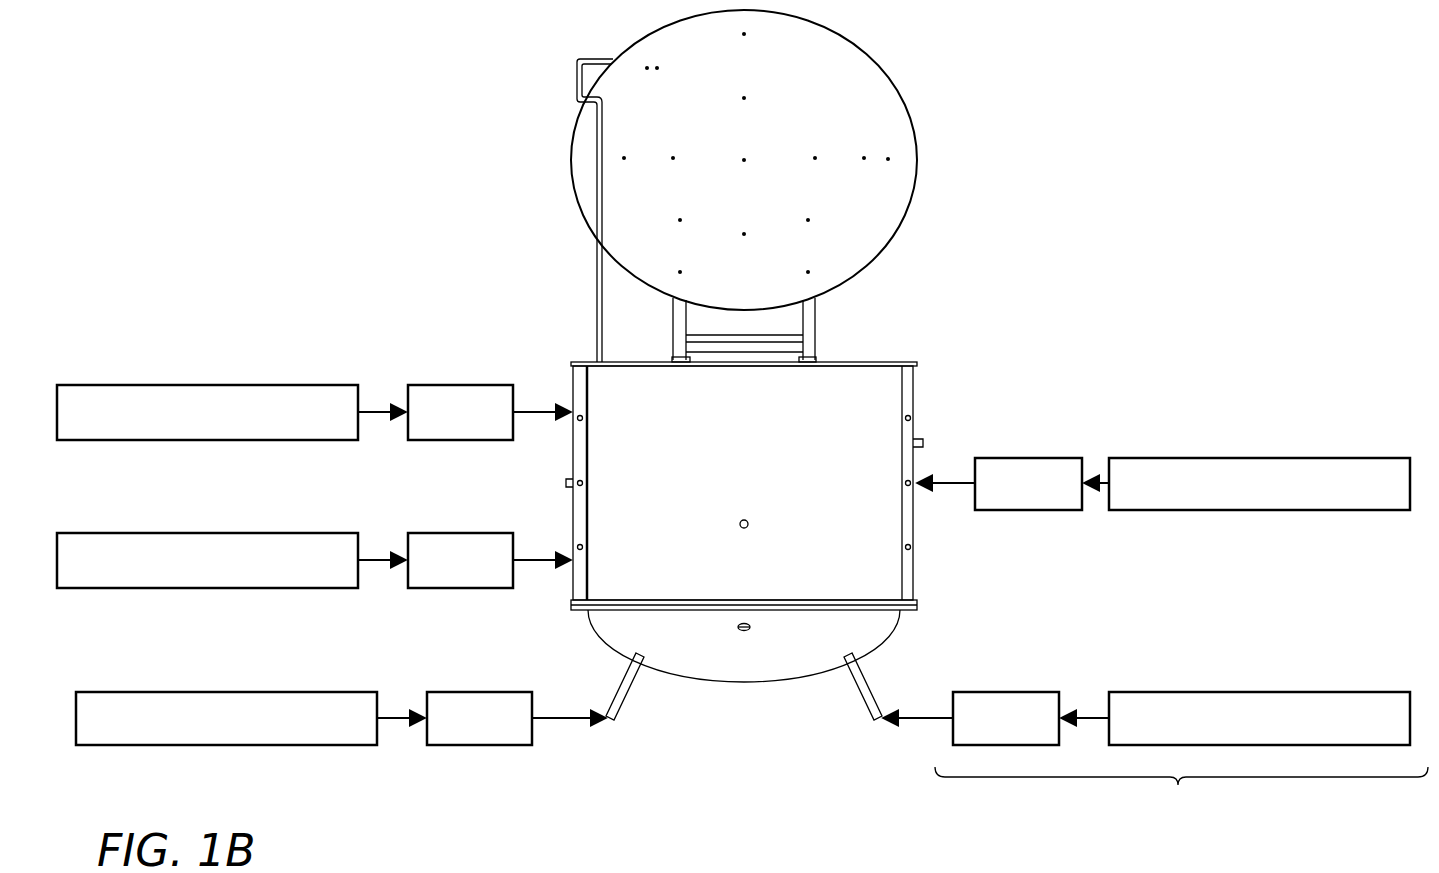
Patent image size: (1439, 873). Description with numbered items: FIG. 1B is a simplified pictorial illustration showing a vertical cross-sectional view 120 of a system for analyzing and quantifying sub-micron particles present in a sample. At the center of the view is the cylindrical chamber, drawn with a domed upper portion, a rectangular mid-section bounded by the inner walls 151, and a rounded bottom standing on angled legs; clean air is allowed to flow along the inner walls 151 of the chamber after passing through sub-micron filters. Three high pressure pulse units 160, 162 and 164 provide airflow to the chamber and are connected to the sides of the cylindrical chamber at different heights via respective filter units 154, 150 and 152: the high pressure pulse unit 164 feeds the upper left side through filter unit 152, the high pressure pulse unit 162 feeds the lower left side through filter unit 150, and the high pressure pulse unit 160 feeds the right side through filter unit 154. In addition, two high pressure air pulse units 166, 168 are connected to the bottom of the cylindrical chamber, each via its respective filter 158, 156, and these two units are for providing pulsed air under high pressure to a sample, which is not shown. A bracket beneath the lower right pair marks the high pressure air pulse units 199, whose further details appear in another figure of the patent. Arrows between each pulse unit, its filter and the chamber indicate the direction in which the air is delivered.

The vertical cross-sectional view 120 is at (262, 117).
The inner walls 151 is at (878, 383).
The filter unit 150 is at (465, 533).
The filter unit 152 is at (465, 385).
The filter unit 154 is at (1036, 458).
The filter 156 is at (1001, 692).
The filter 158 is at (465, 692).
The high pressure pulse unit 160 is at (1291, 458).
The high pressure pulse unit 162 is at (212, 533).
The high pressure pulse unit 164 is at (212, 385).
The high pressure air pulse unit 166 is at (212, 692).
The high pressure air pulse unit 168 is at (1254, 692).
The high pressure air pulse units 199 is at (1181, 794).